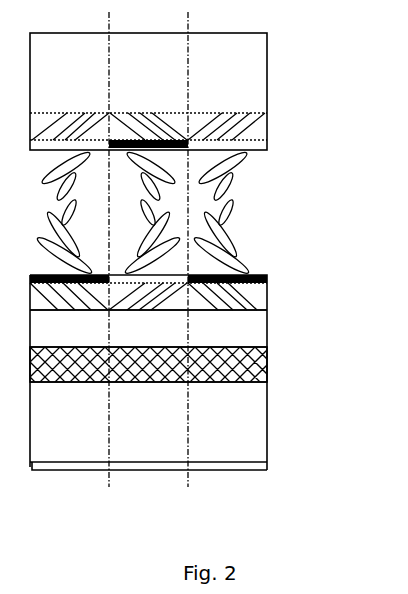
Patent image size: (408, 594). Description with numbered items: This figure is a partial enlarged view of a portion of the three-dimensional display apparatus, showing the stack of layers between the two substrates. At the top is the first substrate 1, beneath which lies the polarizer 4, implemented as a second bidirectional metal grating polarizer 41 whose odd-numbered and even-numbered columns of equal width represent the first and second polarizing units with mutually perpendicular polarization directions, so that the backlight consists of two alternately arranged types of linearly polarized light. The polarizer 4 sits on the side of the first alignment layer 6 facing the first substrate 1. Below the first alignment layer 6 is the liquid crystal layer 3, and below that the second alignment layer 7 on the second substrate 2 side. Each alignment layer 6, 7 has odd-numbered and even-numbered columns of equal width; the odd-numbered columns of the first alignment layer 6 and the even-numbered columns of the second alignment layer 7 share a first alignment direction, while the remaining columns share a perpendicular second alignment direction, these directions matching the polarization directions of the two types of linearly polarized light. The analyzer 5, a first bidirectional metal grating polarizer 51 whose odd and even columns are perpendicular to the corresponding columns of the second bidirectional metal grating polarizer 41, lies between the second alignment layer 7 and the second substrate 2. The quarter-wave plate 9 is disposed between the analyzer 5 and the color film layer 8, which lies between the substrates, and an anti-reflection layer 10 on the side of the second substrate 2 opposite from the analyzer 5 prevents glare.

The first substrate 1 is at (238, 67).
The second substrate 2 is at (243, 409).
The liquid crystal layer 3 is at (222, 225).
The polarizer 4 is at (257, 133).
The second bidirectional metal grating polarizer 41 is at (148, 126).
The analyzer 5 is at (240, 294).
The first bidirectional metal grating polarizer 51 is at (148, 296).
The first alignment layer 6 is at (245, 146).
The second alignment layer 7 is at (247, 273).
The color film layer 8 is at (240, 367).
The quarter-wave plate 9 is at (240, 328).
The anti-reflection layer 10 is at (247, 465).